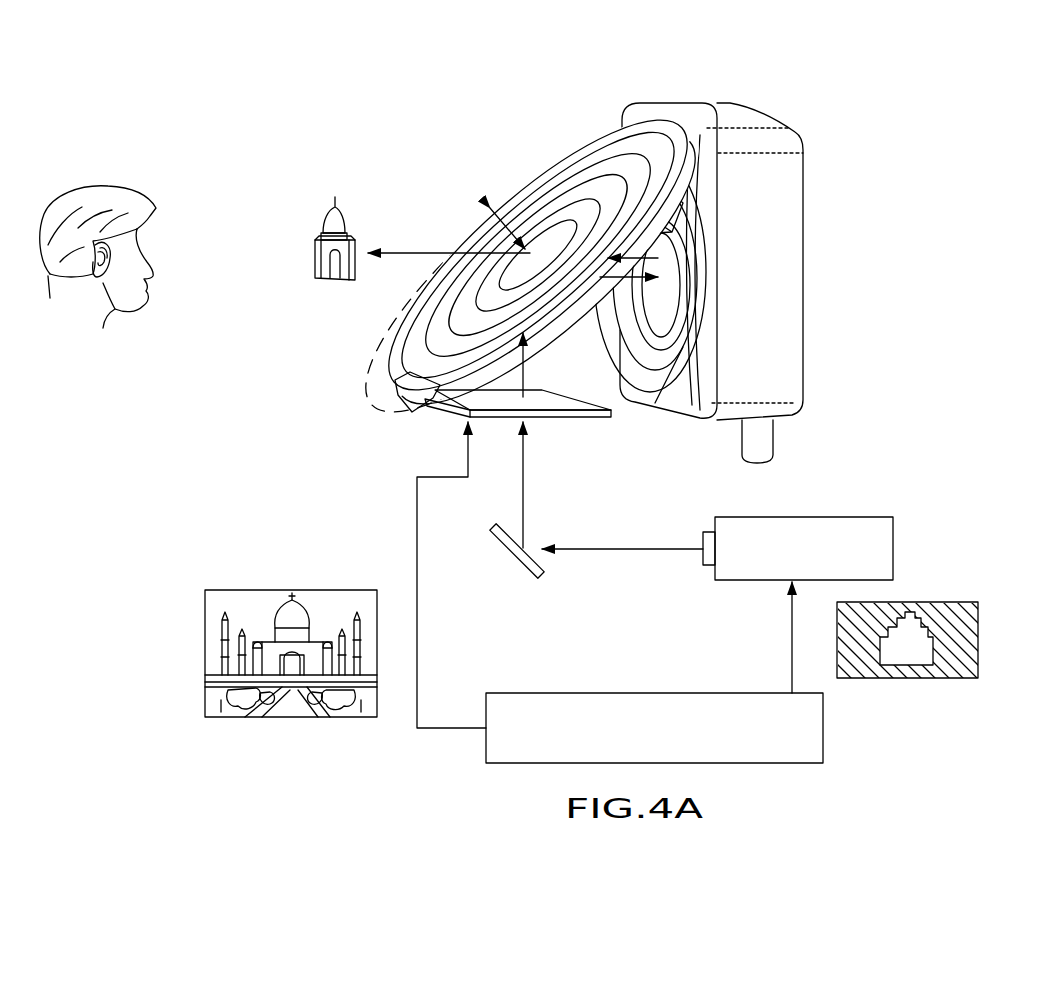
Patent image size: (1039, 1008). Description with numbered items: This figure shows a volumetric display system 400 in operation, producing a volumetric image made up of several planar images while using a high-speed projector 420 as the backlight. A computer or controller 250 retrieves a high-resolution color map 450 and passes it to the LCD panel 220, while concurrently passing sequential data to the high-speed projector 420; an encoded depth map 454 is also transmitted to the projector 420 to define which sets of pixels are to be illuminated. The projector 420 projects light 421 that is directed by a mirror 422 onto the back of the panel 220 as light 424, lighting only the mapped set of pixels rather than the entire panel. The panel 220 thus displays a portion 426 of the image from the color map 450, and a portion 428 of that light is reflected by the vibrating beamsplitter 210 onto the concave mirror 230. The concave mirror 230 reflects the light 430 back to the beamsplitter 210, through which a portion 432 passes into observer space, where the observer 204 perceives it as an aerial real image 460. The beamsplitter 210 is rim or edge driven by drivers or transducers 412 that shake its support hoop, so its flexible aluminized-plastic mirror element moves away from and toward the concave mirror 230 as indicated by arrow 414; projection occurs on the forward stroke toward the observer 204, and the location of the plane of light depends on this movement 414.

The observer 204 is at (87, 309).
The aerial real image 460 is at (322, 204).
The beamsplitter 210 is at (596, 150).
The arrow 414 is at (493, 232).
The portion 432 is at (386, 254).
The concave mirror 230 is at (790, 148).
The volumetric display system 400 is at (862, 180).
The light 430 is at (640, 260).
The portion 428 is at (601, 278).
The portion of the image 426 is at (524, 346).
The LCD panel 220 is at (610, 417).
The drivers or transducers 412 is at (425, 418).
The light 424 is at (525, 482).
The mirror 422 is at (528, 572).
The light 421 is at (628, 550).
The high-speed projector 420 is at (883, 573).
The computer or controller 250 is at (673, 755).
The high-resolution color map 450 is at (292, 717).
The encoded depth map 454 is at (979, 645).